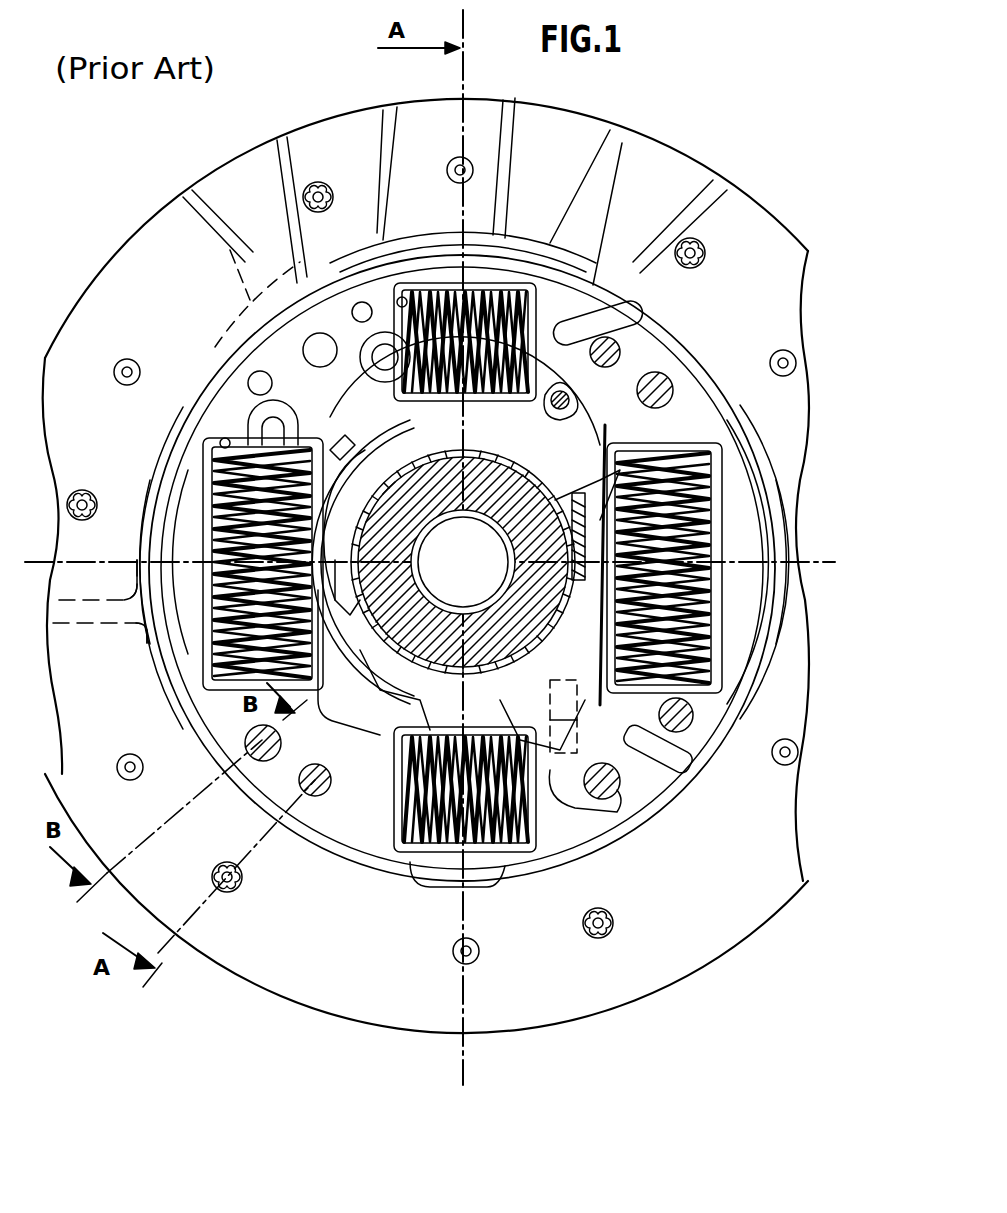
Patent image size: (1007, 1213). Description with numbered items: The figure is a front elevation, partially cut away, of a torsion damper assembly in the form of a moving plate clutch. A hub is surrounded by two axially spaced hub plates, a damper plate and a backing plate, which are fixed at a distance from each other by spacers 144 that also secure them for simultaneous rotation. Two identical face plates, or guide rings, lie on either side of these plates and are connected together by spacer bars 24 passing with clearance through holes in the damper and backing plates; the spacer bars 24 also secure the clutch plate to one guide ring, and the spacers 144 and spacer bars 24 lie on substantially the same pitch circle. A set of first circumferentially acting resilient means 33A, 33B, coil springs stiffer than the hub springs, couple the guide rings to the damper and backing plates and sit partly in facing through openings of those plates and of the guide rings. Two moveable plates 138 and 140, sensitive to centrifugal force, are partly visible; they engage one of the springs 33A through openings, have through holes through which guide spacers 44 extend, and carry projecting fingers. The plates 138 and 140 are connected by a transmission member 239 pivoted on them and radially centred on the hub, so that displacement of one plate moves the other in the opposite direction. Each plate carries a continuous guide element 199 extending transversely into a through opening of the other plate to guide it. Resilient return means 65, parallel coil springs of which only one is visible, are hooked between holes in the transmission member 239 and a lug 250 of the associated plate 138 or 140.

The spacer bars 24 is at (647, 803).
The first circumferentially acting resilient means 33A is at (393, 345).
The first circumferentially acting resilient means 33B is at (213, 650).
The guide spacers 44 is at (562, 390).
The resilient return means 65 is at (690, 482).
The moveable plate 138 is at (542, 848).
The moveable plate 140 is at (640, 315).
The spacers 144 is at (273, 767).
The guide element 199 is at (583, 723).
The transmission member 239 is at (563, 703).
The lug 250 is at (600, 430).